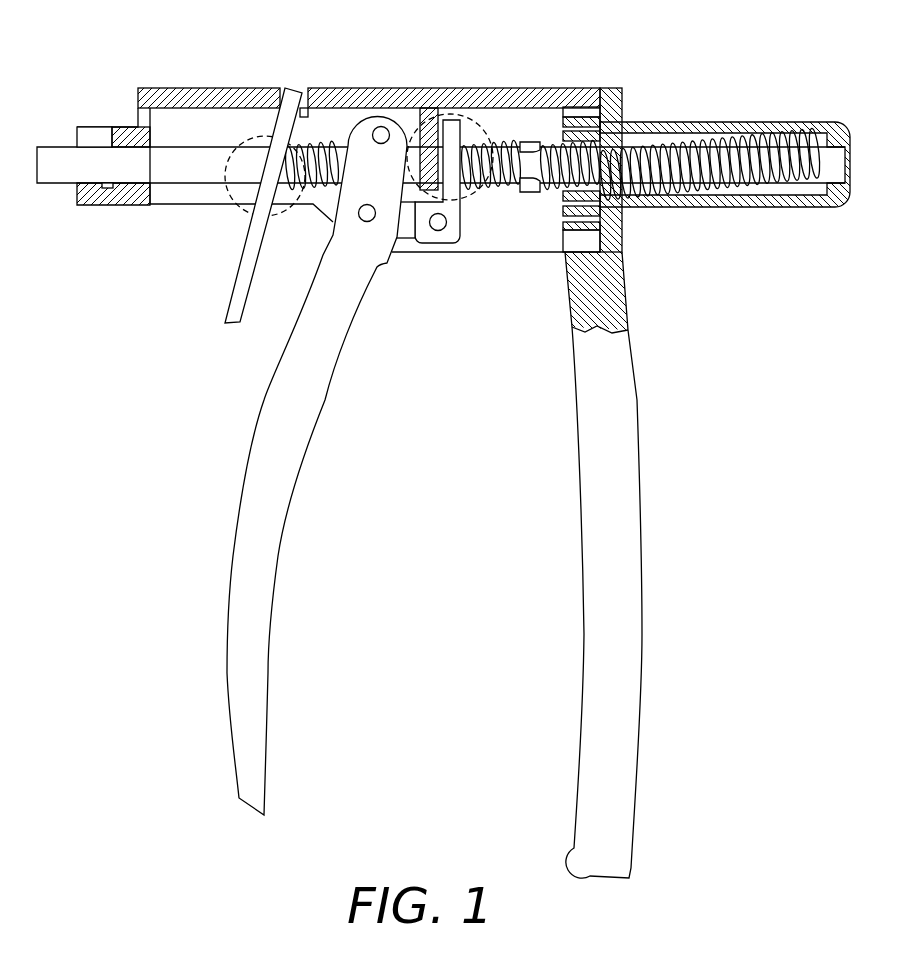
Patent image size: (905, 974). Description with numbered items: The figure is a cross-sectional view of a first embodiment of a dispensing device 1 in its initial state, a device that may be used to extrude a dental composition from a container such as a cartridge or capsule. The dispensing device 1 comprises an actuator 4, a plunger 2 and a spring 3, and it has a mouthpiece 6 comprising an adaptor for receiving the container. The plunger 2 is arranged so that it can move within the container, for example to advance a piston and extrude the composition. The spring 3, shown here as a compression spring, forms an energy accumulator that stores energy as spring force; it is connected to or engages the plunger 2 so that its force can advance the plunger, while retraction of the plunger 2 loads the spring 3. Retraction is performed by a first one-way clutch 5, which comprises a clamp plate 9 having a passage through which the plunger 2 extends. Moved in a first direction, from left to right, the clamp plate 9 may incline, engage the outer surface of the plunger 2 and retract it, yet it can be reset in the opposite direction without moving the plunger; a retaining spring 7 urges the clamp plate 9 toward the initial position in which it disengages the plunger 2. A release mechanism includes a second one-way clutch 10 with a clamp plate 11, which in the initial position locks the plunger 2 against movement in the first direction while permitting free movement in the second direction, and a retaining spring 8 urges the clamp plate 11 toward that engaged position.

The dispensing device 1 is at (668, 43).
The plunger 2 is at (170, 163).
The spring 3 is at (668, 188).
The actuator 4 is at (247, 554).
The first one-way clutch 5 is at (462, 201).
The mouthpiece 6 is at (92, 133).
The retaining spring 7 is at (505, 187).
The retaining spring 8 is at (311, 190).
The clamp plate 9 is at (453, 130).
The second one-way clutch 10 is at (238, 198).
The clamp plate 11 is at (275, 165).